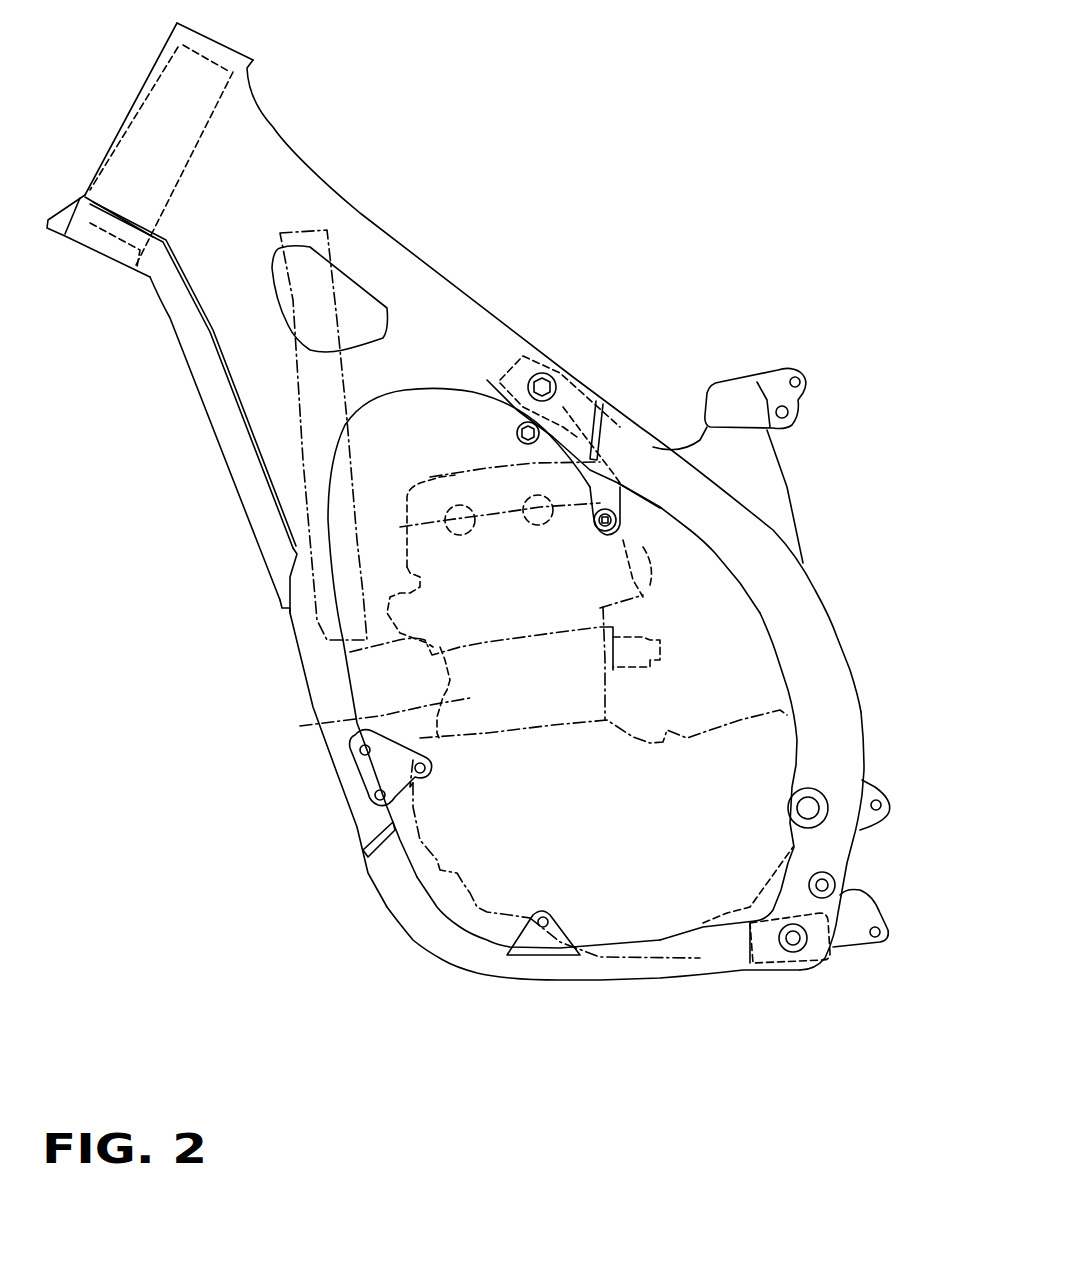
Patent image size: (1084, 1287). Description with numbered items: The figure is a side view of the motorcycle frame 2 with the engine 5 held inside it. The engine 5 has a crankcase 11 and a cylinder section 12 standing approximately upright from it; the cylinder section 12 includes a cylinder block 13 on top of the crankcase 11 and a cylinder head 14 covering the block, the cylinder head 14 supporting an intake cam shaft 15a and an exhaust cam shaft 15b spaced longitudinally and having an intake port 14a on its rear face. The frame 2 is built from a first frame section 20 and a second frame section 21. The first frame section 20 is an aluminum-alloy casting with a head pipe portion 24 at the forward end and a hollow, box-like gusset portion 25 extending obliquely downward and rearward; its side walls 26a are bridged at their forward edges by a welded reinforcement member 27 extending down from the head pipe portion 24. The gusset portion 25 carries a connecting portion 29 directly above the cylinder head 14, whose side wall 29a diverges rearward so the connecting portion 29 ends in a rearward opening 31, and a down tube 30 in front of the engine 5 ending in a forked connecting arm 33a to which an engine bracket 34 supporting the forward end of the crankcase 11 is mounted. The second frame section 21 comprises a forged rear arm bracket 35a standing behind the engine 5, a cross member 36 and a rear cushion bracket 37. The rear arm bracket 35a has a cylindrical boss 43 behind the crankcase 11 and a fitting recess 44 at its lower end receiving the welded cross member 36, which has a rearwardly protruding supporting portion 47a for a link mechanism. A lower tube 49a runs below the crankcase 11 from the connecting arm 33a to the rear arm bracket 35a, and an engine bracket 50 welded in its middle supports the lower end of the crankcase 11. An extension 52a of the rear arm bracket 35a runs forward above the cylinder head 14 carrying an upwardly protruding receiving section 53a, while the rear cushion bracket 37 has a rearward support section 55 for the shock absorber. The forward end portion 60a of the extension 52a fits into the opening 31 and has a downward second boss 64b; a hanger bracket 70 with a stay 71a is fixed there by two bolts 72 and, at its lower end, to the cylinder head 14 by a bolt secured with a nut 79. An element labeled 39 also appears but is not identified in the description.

The frame 2 is at (400, 237).
The engine 5 is at (627, 921).
The crankcase 11 is at (460, 903).
The cylinder section 12 is at (235, 662).
The cylinder block 13 is at (350, 720).
The cylinder head 14 is at (350, 652).
The intake port 14a is at (643, 573).
The intake cam shaft 15a is at (547, 527).
The exhaust cam shaft 15b is at (467, 533).
The first frame section 20 is at (264, 382).
The second frame section 21 is at (823, 604).
The head pipe portion 24 is at (147, 123).
The gusset portion 25 is at (277, 183).
The side walls 26a is at (237, 333).
The reinforcement member 27 is at (230, 453).
The connecting portion 29 is at (580, 403).
The side wall 29a is at (568, 403).
The down tube 30 is at (300, 620).
The opening 31 is at (653, 445).
The connecting arm 33a is at (362, 812).
The engine bracket 34 is at (373, 772).
The rear arm bracket 35a is at (833, 743).
The cross member 36 is at (757, 963).
The rear cushion bracket 37 is at (733, 393).
The lower rear frame portion 39 is at (837, 847).
The cylindrical boss 43 is at (788, 808).
The fitting recess 44 is at (793, 970).
The supporting portion 47a is at (867, 903).
The lower tube 49a is at (473, 963).
The engine bracket 50 is at (538, 955).
The extension 52a is at (657, 440).
The receiving section 53a is at (773, 487).
The support section 55 is at (800, 388).
The forward end portion 60a is at (542, 372).
The second boss 64b is at (517, 428).
The hanger bracket 70 is at (617, 483).
The stay 71a is at (665, 509).
The bolts 72 is at (530, 372).
The nut 79 is at (614, 528).